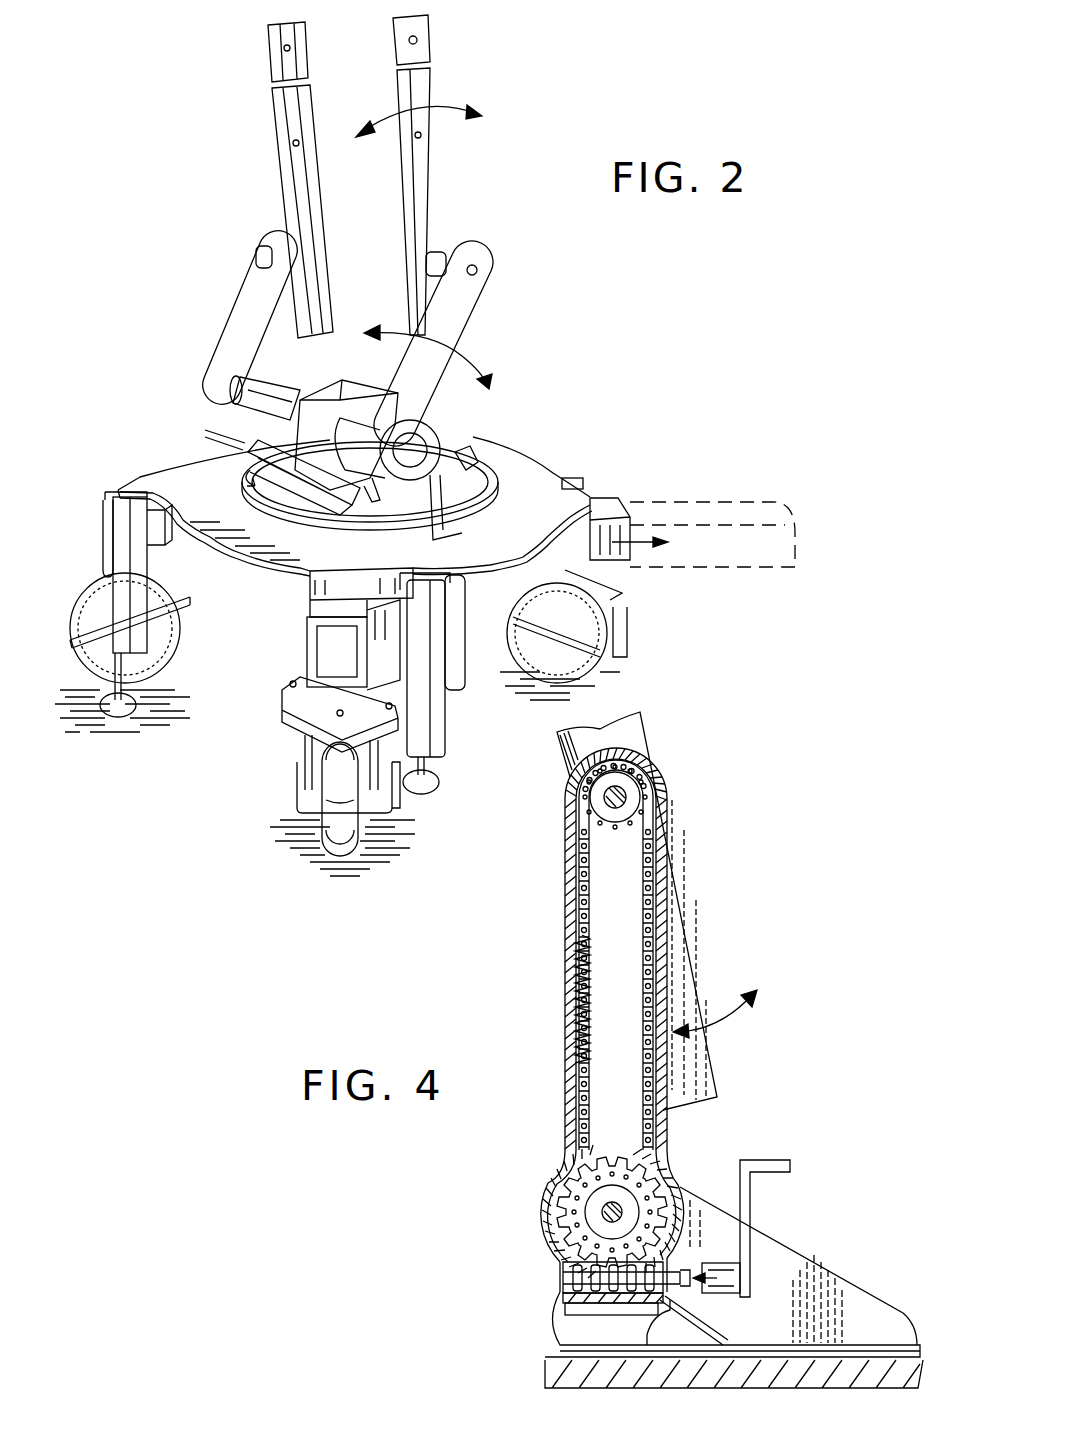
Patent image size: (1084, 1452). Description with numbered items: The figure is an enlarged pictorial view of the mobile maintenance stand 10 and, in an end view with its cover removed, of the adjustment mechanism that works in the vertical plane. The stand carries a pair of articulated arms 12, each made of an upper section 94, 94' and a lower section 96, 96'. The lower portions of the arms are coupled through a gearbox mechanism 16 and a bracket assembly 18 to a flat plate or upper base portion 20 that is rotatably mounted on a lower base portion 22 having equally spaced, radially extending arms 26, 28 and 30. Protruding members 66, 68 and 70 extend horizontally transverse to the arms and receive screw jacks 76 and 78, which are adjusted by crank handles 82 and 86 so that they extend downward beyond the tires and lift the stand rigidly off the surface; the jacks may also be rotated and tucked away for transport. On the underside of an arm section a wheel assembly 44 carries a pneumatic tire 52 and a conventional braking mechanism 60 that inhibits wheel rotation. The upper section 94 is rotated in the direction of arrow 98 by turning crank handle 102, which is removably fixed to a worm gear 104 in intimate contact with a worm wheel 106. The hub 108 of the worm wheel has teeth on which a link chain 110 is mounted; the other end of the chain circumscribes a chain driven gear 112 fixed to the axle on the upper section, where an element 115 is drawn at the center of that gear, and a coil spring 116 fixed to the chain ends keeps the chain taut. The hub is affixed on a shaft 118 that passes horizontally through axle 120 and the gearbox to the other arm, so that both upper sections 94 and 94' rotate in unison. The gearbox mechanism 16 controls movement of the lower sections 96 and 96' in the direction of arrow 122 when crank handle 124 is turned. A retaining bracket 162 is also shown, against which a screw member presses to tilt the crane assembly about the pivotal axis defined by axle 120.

In FIG. 2, the mobile maintenance stand 10 is at (578, 374).
In FIG. 2, the articulated arms 12 is at (402, 229).
In FIG. 4, the articulated arms 12 is at (651, 748).
In FIG. 2, the gearbox mechanism 16 is at (345, 380).
In FIG. 2, the bracket assembly 18 is at (437, 452).
In FIG. 4, the bracket assembly 18 is at (822, 1295).
In FIG. 2, the upper base portion 20 is at (395, 483).
In FIG. 2, the lower base portion 22 is at (515, 462).
In FIG. 4, the lower base portion 22 is at (560, 1360).
In FIG. 2, the radially extending arm 26 is at (160, 483).
In FIG. 2, the radially extending arm 28 is at (300, 578).
In FIG. 2, the radially extending arm 30 is at (593, 503).
In FIG. 2, the wheel assembly 44 is at (297, 798).
In FIG. 2, the pneumatic tire 52 is at (357, 852).
In FIG. 2, the braking mechanism 60 is at (380, 812).
In FIG. 2, the protruding member 66 is at (163, 540).
In FIG. 2, the protruding member 68 is at (391, 646).
In FIG. 2, the protruding member 70 is at (577, 483).
In FIG. 2, the screw jack 76 is at (115, 583).
In FIG. 2, the screw jack 78 is at (430, 733).
In FIG. 2, the crank handle 82 is at (103, 520).
In FIG. 2, the crank handle 86 is at (458, 628).
In FIG. 2, the upper section 94 is at (273, 180).
In FIG. 4, the upper section 94 is at (654, 911).
In FIG. 2, the upper section 94' is at (446, 175).
In FIG. 2, the lower section 96 is at (250, 318).
In FIG. 4, the lower section 96 is at (587, 1020).
In FIG. 2, the lower section 96' is at (455, 343).
In FIG. 2, the arrow 98 is at (453, 104).
In FIG. 4, the arrow 98 is at (730, 1020).
In FIG. 2, the crank handle 102 is at (457, 522).
In FIG. 4, the crank handle 102 is at (750, 1200).
In FIG. 4, the worm gear 104 is at (567, 1283).
In FIG. 4, the worm wheel 106 is at (563, 1192).
In FIG. 4, the hub 108 is at (590, 1208).
In FIG. 4, the link chain 110 is at (580, 1106).
In FIG. 4, the chain driven gear 112 is at (642, 794).
In FIG. 4, the pin 115 is at (620, 804).
In FIG. 4, the coil spring 116 is at (576, 985).
In FIG. 4, the shaft 118 is at (623, 1205).
In FIG. 2, the axle 120 is at (257, 413).
In FIG. 2, the arrow 122 is at (468, 363).
In FIG. 2, the crank handle 124 is at (243, 476).
In FIG. 2, the retaining bracket 162 is at (472, 450).